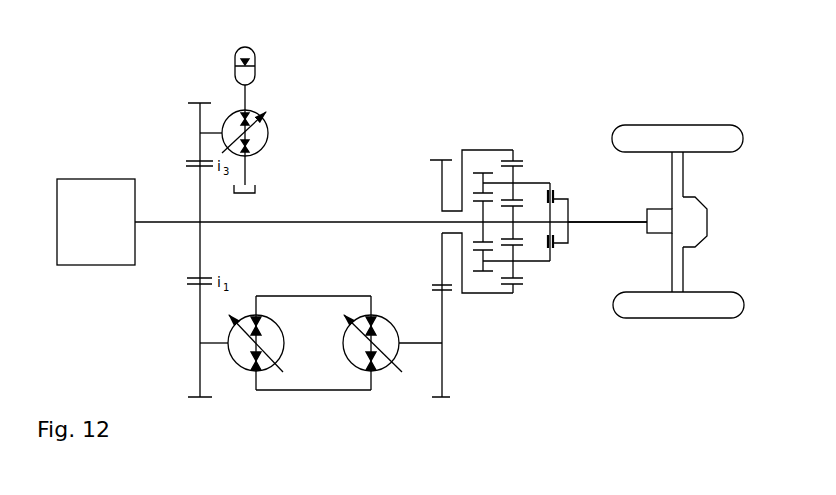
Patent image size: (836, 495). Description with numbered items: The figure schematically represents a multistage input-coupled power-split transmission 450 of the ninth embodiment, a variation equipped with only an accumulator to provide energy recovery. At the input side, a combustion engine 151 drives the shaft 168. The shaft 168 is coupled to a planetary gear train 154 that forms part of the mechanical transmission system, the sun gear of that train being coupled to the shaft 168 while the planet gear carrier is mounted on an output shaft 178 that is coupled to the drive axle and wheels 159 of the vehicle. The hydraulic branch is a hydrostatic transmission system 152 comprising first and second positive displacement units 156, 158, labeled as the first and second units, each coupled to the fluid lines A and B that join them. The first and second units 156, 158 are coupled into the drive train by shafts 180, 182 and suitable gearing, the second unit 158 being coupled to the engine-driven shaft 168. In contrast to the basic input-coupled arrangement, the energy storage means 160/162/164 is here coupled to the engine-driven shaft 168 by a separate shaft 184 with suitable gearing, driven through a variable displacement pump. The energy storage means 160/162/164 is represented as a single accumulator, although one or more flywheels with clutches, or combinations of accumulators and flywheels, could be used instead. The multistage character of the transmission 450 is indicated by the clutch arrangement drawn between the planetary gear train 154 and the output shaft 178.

The combustion engine 151 is at (92, 255).
The shaft 168 is at (370, 221).
The shaft 184 is at (213, 131).
The high pressure accumulator 160 is at (310, 63).
The low pressure accumulator 162 is at (310, 63).
The flywheel 164 is at (317, 43).
The hydrostatic transmission system 152 is at (305, 350).
The first positive displacement unit 156 is at (248, 315).
The second positive displacement unit 158 is at (379, 316).
The shaft 180 is at (218, 343).
The shaft 182 is at (422, 343).
The planetary gear train 154 is at (395, 132).
The multistage input-coupled PSD transmission 450 is at (524, 80).
The shaft 178 is at (607, 222).
The drive axle and wheels 159 is at (743, 226).